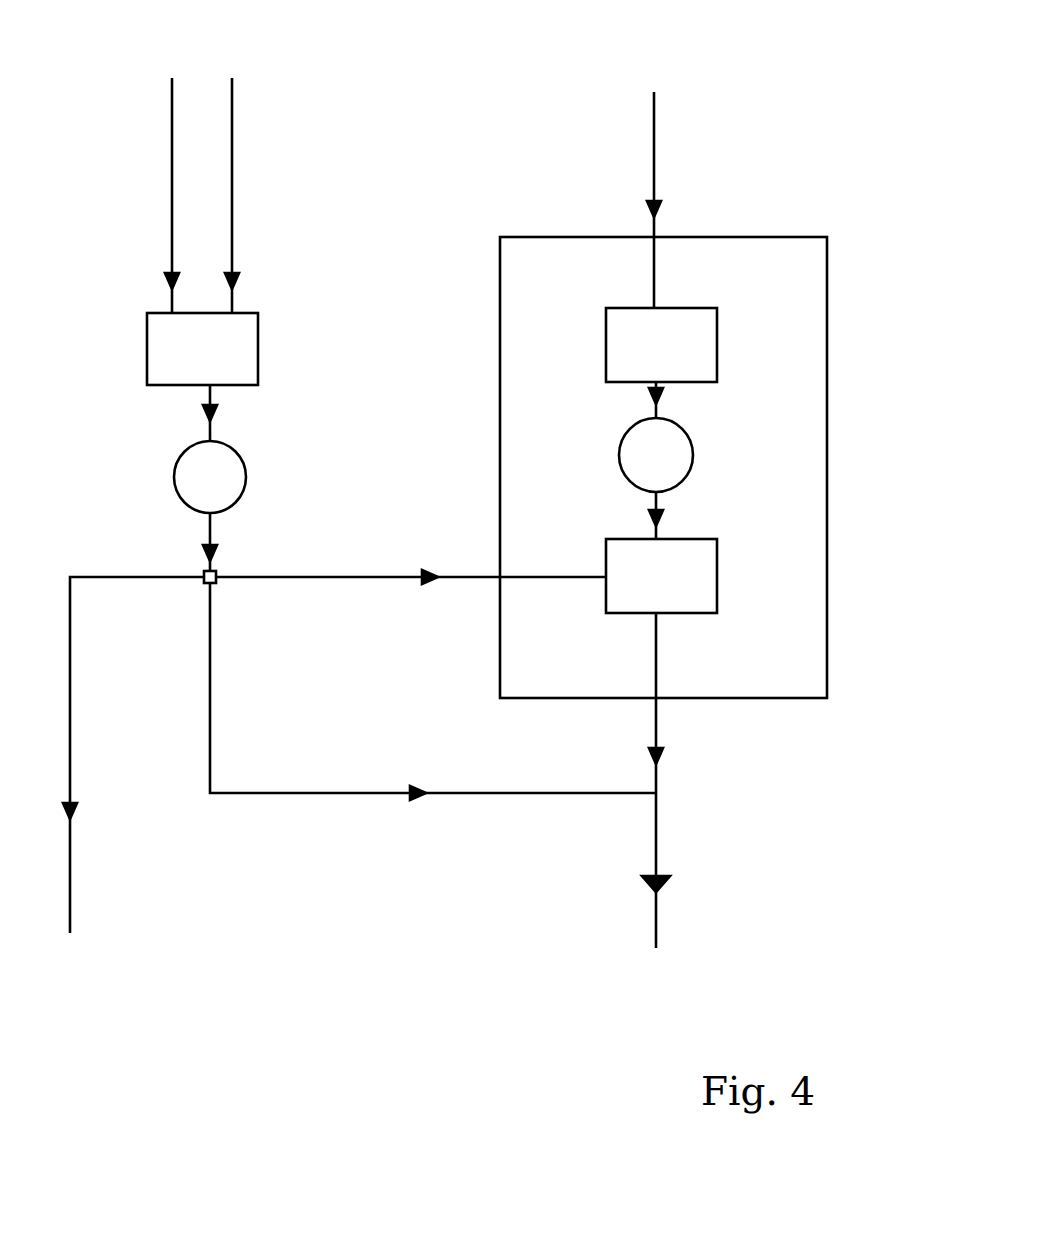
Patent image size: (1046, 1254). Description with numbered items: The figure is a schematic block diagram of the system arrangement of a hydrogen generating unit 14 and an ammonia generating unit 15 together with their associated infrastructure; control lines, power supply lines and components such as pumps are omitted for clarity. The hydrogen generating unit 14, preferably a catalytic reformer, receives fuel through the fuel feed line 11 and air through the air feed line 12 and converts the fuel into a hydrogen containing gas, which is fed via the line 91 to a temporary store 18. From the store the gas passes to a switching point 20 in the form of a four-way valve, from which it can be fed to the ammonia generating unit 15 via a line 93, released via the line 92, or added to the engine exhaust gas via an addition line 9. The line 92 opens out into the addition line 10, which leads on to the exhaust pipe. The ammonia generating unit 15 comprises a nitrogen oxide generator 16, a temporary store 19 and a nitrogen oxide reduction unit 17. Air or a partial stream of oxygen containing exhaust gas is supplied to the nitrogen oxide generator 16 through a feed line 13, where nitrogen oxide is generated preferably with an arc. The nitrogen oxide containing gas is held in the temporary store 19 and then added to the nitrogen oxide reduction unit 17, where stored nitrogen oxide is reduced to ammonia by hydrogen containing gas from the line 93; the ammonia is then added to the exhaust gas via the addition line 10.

The addition line 9 is at (72, 846).
The addition line 10 is at (658, 735).
The fuel feed line 11 is at (170, 158).
The air feed line 12 is at (234, 132).
The feed line 13 is at (652, 148).
The hydrogen generating unit 14 is at (235, 347).
The ammonia generating unit 15 is at (517, 340).
The nitrogen oxide generator 16 is at (697, 338).
The nitrogen oxide reduction unit 17 is at (700, 568).
The temporary store 18 is at (222, 470).
The temporary store 19 is at (672, 462).
The switching point 20 is at (214, 583).
The line 91 is at (200, 398).
The line 92 is at (367, 795).
The line 93 is at (393, 578).